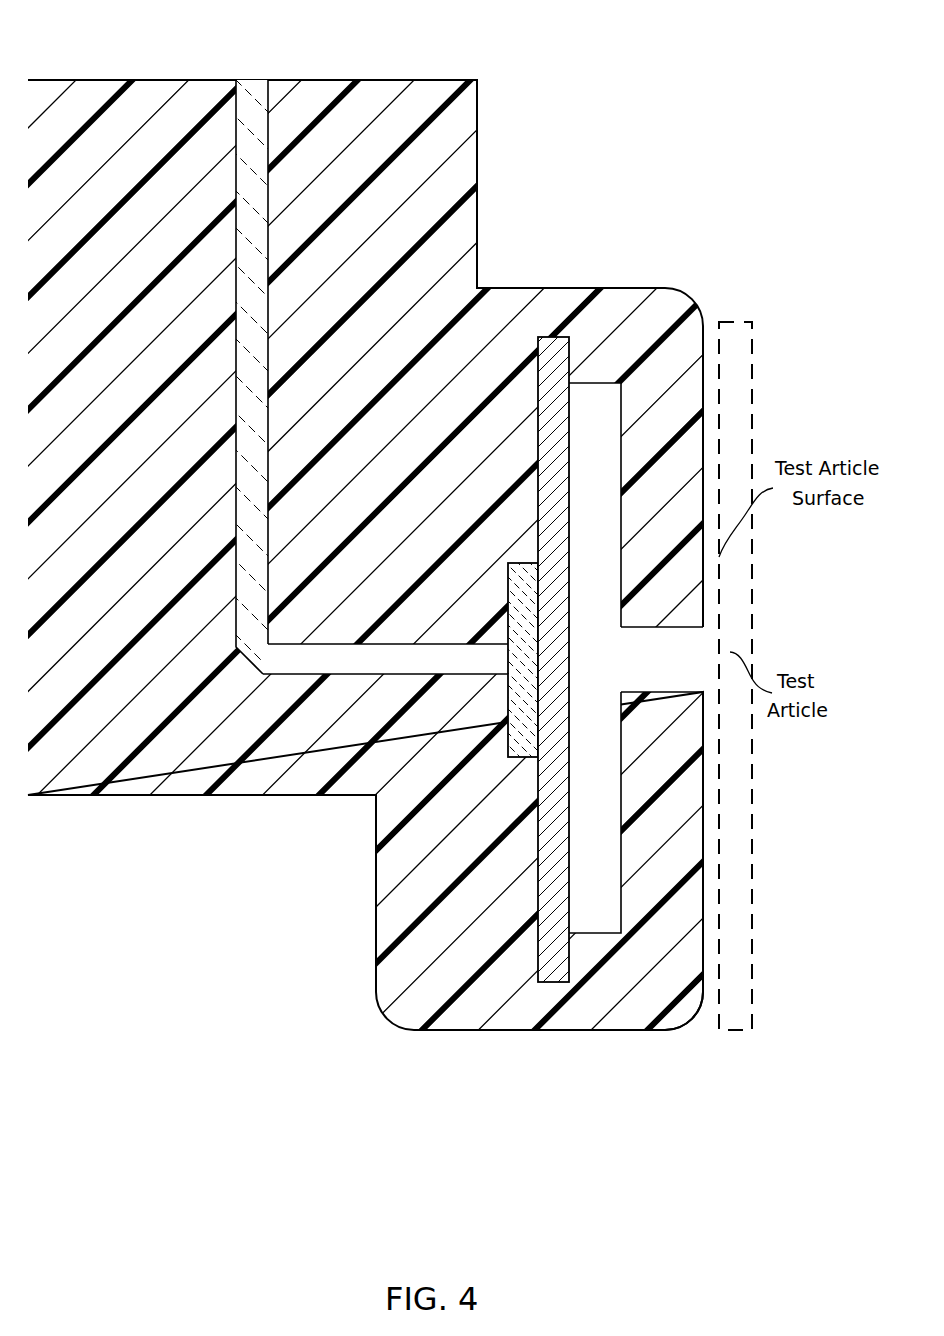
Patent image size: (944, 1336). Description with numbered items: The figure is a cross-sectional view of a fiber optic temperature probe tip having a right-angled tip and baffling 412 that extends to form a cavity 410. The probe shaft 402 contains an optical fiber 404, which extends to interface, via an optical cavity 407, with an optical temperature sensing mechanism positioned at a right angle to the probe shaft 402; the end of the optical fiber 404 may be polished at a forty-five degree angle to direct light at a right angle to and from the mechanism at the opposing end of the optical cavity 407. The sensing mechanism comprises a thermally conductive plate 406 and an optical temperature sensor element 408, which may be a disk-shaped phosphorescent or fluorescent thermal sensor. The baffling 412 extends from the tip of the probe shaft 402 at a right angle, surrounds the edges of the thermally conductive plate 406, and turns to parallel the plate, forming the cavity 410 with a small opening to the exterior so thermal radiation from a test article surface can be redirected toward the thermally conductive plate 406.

The probe shaft 402 is at (480, 150).
The optical fiber 404 is at (252, 80).
The thermally conductive plate 406 is at (550, 345).
The optical cavity 407 is at (350, 657).
The optical temperature sensor element 408 is at (520, 757).
The cavity 410 is at (605, 410).
The baffling 412 is at (677, 978).